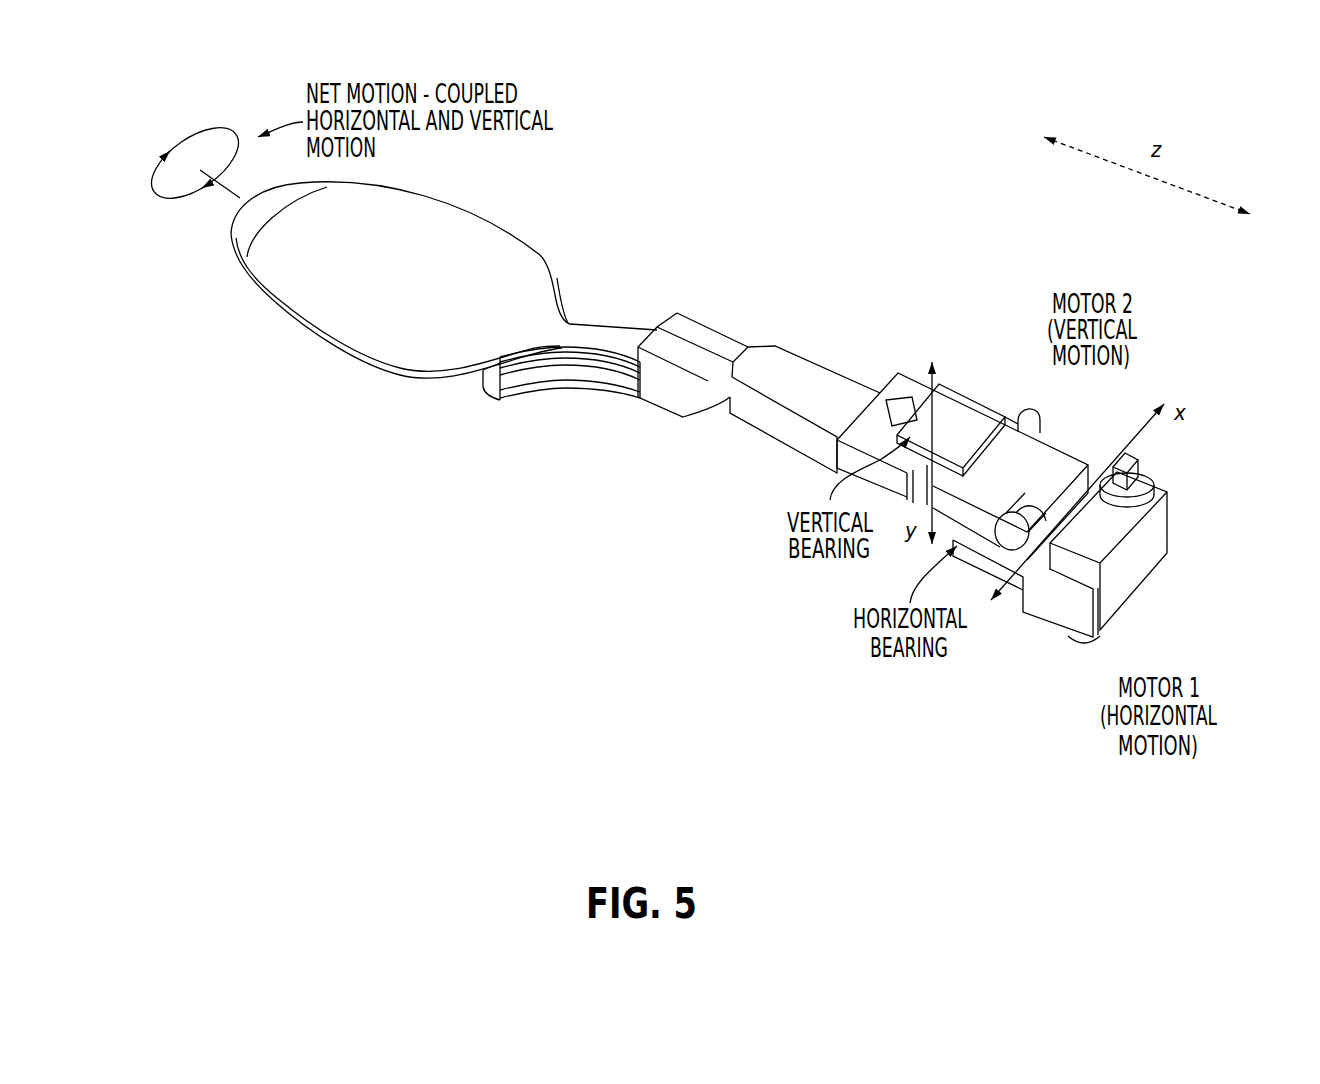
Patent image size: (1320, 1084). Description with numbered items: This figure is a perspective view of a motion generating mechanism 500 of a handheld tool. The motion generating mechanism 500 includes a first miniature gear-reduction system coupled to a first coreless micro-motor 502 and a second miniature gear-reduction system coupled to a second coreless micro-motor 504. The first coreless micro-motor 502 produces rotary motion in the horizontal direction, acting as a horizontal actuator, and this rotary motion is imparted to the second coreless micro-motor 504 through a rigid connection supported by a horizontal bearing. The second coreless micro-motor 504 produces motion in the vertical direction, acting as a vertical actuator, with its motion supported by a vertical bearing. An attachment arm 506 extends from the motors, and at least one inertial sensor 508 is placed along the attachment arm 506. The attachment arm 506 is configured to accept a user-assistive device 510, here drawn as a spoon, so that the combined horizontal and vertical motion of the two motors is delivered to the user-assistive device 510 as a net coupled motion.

The motion generating mechanism 500 is at (818, 707).
The first coreless micro-motor 502 is at (1137, 607).
The second coreless micro-motor 504 is at (1067, 435).
The attachment arm 506 is at (715, 437).
The inertial sensor 508 is at (607, 413).
The user-assistive device 510 is at (323, 367).